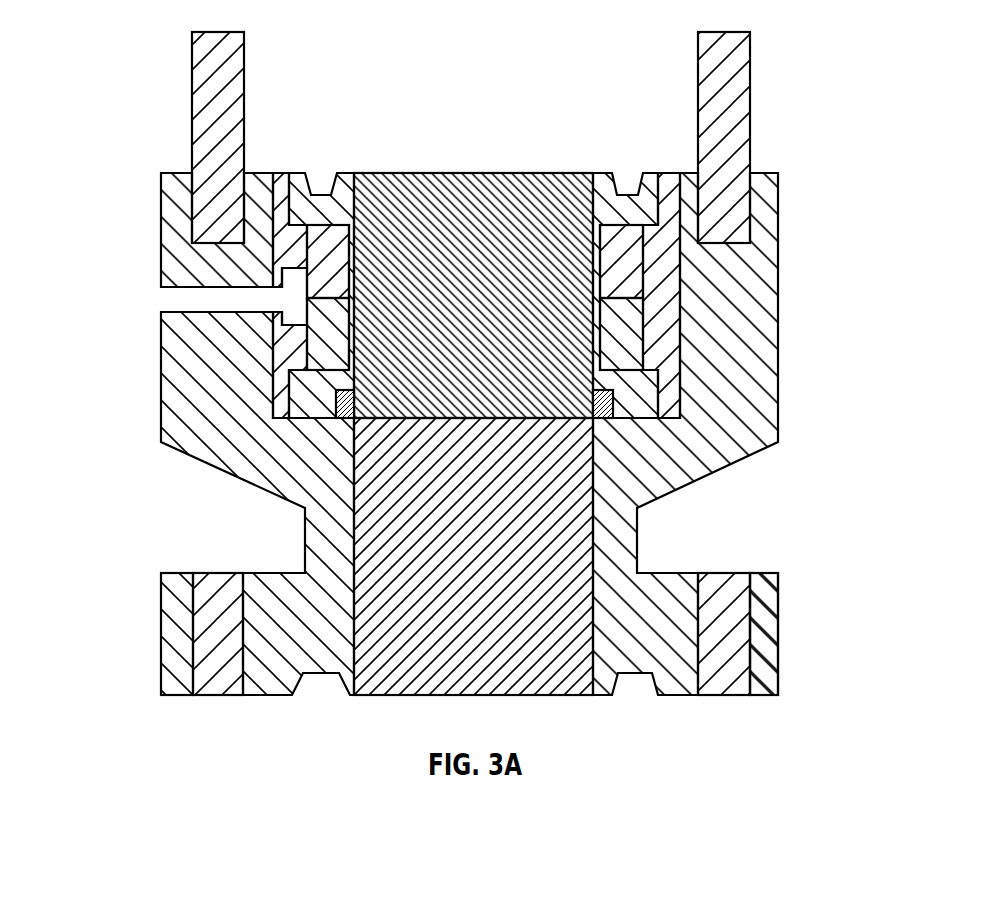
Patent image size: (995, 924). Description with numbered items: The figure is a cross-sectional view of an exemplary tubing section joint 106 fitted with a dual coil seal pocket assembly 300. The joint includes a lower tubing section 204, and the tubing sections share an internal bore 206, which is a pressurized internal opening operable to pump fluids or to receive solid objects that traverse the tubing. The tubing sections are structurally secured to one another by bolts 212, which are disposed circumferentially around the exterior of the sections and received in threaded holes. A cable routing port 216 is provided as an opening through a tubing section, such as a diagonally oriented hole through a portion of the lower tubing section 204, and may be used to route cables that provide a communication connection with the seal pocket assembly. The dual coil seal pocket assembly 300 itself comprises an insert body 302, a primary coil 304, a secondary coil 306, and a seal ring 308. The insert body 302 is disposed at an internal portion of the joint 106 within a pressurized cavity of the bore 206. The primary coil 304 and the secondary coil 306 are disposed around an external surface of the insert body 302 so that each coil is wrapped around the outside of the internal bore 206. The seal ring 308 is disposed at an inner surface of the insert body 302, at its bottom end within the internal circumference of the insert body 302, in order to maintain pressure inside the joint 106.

The tubing section joint 106 is at (130, 155).
The lower tubing section 204 is at (220, 470).
The internal bore 206 is at (467, 183).
The bolts 212 is at (740, 88).
The cable routing port 216 is at (170, 302).
The dual coil seal pocket assembly 300 is at (627, 162).
The insert body 302 is at (658, 212).
The primary coil 304 is at (636, 267).
The secondary coil 306 is at (636, 337).
The seal ring 308 is at (612, 400).